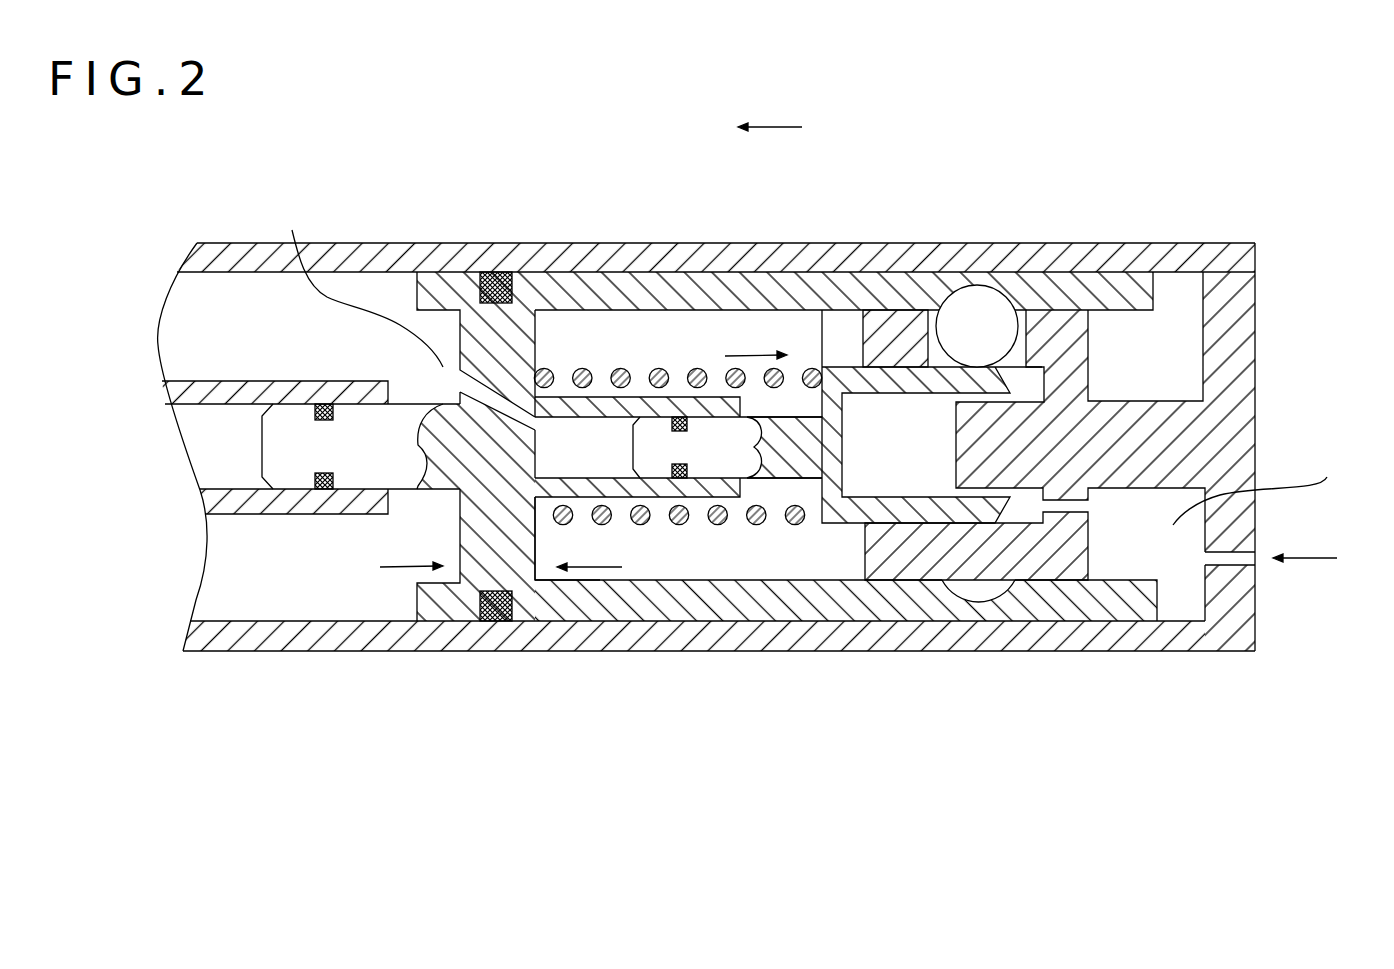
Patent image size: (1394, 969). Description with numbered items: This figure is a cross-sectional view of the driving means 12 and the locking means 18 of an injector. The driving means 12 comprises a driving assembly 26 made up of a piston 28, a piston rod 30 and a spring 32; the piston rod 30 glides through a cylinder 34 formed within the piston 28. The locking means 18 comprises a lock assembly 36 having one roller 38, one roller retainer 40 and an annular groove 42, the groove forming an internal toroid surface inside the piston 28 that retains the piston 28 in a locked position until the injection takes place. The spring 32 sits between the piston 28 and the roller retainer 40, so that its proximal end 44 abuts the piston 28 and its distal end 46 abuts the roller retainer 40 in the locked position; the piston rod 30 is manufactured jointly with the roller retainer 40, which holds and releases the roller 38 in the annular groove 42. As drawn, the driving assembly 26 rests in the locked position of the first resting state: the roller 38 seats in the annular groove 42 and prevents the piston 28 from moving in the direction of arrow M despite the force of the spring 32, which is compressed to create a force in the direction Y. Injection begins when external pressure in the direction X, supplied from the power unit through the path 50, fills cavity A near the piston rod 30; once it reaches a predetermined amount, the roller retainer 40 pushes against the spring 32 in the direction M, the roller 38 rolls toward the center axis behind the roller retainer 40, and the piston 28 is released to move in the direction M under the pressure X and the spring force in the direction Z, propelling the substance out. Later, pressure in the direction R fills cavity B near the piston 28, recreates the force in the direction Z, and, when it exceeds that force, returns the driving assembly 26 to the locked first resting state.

The driving means 12 is at (590, 230).
The locking means 18 is at (862, 656).
The driving assembly 26 is at (543, 228).
The piston 28 is at (493, 325).
The piston rod 30 is at (700, 452).
The spring 32 is at (698, 378).
The cylinder 34 is at (660, 488).
The lock assembly 36 is at (918, 462).
The roller 38 is at (990, 312).
The roller retainer 40 is at (902, 383).
The annular groove 42 is at (985, 603).
The proximal end 44 is at (540, 545).
The distal end 46 is at (818, 366).
The path 50 is at (1250, 560).
The cavity A is at (1261, 483).
The cavity B is at (357, 274).
The direction of external pressure X is at (1320, 563).
The direction of spring force Y is at (756, 340).
The direction of spring force Z is at (589, 552).
The direction of pressure R is at (411, 553).
The direction of piston movement M is at (789, 130).